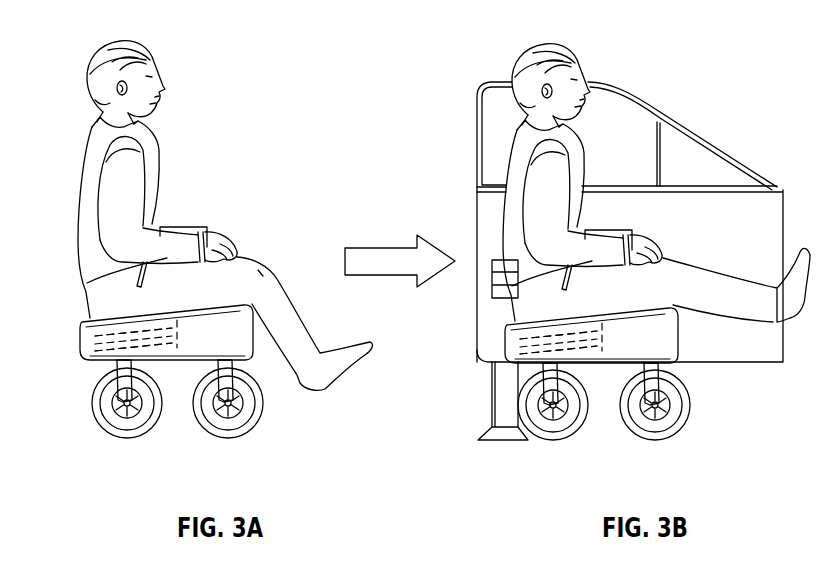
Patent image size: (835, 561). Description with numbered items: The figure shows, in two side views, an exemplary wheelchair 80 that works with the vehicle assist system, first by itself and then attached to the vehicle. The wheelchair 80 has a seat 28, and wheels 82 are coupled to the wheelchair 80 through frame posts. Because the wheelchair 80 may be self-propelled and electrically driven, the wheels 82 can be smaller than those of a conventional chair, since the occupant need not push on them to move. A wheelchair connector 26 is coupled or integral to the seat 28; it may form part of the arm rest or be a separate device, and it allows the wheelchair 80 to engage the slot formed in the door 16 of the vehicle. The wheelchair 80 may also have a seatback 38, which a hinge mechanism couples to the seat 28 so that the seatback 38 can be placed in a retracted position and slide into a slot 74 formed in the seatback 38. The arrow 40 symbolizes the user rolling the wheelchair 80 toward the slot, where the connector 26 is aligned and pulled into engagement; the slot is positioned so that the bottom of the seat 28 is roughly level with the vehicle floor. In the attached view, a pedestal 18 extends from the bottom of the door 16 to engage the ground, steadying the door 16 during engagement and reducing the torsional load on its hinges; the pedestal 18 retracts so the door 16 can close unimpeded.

In FIG. 3A, the wheelchair 80 is at (214, 49).
In FIG. 3A, the wheelchair connector 26 is at (187, 227).
In FIG. 3A, the seat 28 is at (82, 319).
In FIG. 3B, the seat 28 is at (688, 362).
In FIG. 3A, the seatback 38 is at (90, 342).
In FIG. 3B, the seatback 38 is at (520, 328).
In FIG. 3A, the slot 74 is at (100, 366).
In FIG. 3B, the slot 74 is at (578, 364).
In FIG. 3A, the wheels 82 is at (120, 437).
In FIG. 3B, the wheels 82 is at (553, 440).
In FIG. 3B, the arrow 40 is at (380, 247).
In FIG. 3B, the door 16 is at (673, 122).
In FIG. 3B, the pedestal 18 is at (490, 392).